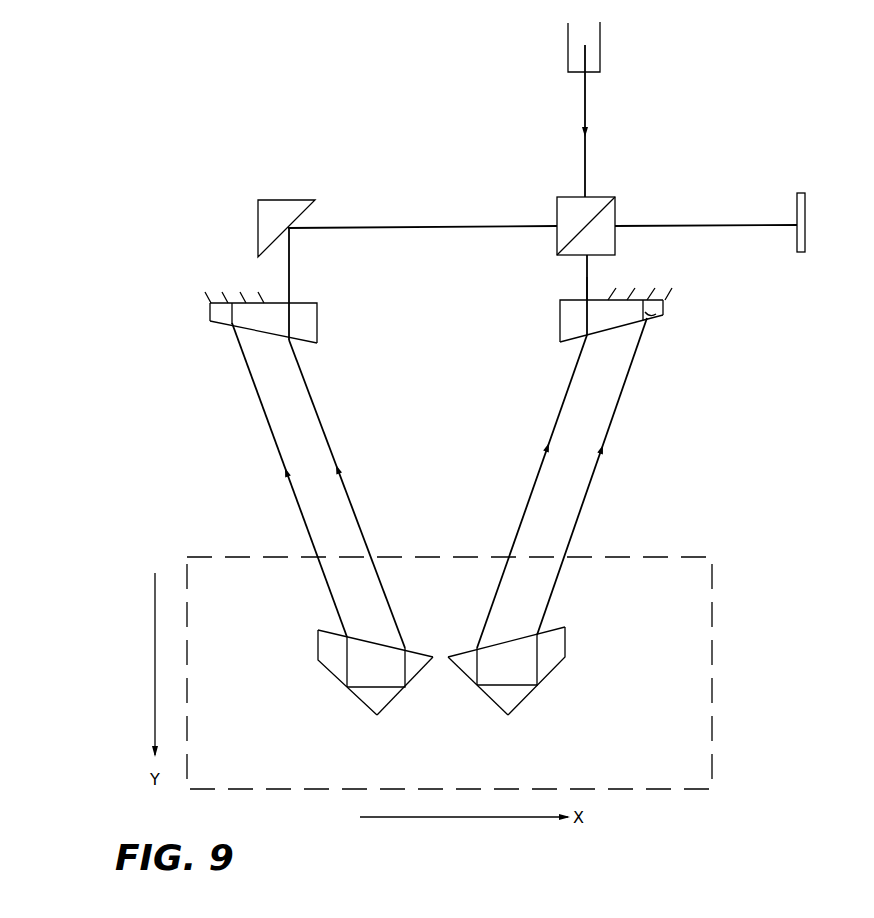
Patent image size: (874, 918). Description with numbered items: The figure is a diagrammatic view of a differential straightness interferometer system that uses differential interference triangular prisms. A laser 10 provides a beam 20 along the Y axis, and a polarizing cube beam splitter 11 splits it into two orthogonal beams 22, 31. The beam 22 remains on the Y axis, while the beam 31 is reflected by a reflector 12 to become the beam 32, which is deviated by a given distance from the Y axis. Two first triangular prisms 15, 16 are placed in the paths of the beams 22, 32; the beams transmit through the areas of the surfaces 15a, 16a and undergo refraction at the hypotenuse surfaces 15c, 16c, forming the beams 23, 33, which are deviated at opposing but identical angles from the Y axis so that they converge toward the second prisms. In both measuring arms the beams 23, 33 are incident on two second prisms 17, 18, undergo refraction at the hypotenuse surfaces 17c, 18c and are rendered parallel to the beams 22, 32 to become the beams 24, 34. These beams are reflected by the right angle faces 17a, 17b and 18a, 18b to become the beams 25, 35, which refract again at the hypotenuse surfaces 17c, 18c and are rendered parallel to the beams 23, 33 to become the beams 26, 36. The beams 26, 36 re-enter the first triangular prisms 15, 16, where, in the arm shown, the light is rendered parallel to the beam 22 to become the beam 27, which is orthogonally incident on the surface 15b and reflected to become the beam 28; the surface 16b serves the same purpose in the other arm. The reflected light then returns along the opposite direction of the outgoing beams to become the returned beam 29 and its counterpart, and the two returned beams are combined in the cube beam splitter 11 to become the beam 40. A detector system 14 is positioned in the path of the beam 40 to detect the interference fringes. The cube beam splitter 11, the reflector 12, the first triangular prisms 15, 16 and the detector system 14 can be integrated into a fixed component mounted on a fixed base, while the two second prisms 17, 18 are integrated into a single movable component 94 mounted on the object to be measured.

The laser 10 is at (600, 46).
The beam 20 is at (583, 107).
The polarizing cube beam splitter 11 is at (597, 197).
The beam 31 is at (505, 225).
The beam 40 is at (667, 225).
The detector system 14 is at (800, 193).
The reflector 12 is at (280, 200).
The beam 32 is at (290, 252).
The first triangular prism 16 is at (255, 335).
The surface 16a is at (313, 303).
The surface 16b is at (210, 297).
The hypotenuse surface 16c is at (310, 343).
The beam 33 is at (320, 422).
The beam 36 is at (263, 410).
The beam 22 is at (587, 265).
The beam 29 is at (587, 277).
The first triangular prism 15 is at (618, 331).
The surface 15a is at (575, 300).
The surface 15b is at (648, 293).
The hypotenuse surface 15c is at (612, 330).
The beam 27 is at (689, 333).
The beam 28 is at (653, 316).
The beam 23 is at (545, 448).
The beam 26 is at (604, 452).
The movable component 94 is at (713, 592).
The second prism 18 is at (352, 675).
The right angle face 18a is at (388, 707).
The right angle face 18b is at (360, 703).
The hypotenuse surface 18c is at (373, 640).
The beam 35 is at (343, 657).
The beam 34 is at (405, 667).
The second prism 17 is at (541, 674).
The right angle face 17a is at (483, 693).
The right angle face 17b is at (528, 692).
The hypotenuse surface 17c is at (507, 638).
The beam 24 is at (473, 657).
The beam 25 is at (538, 660).